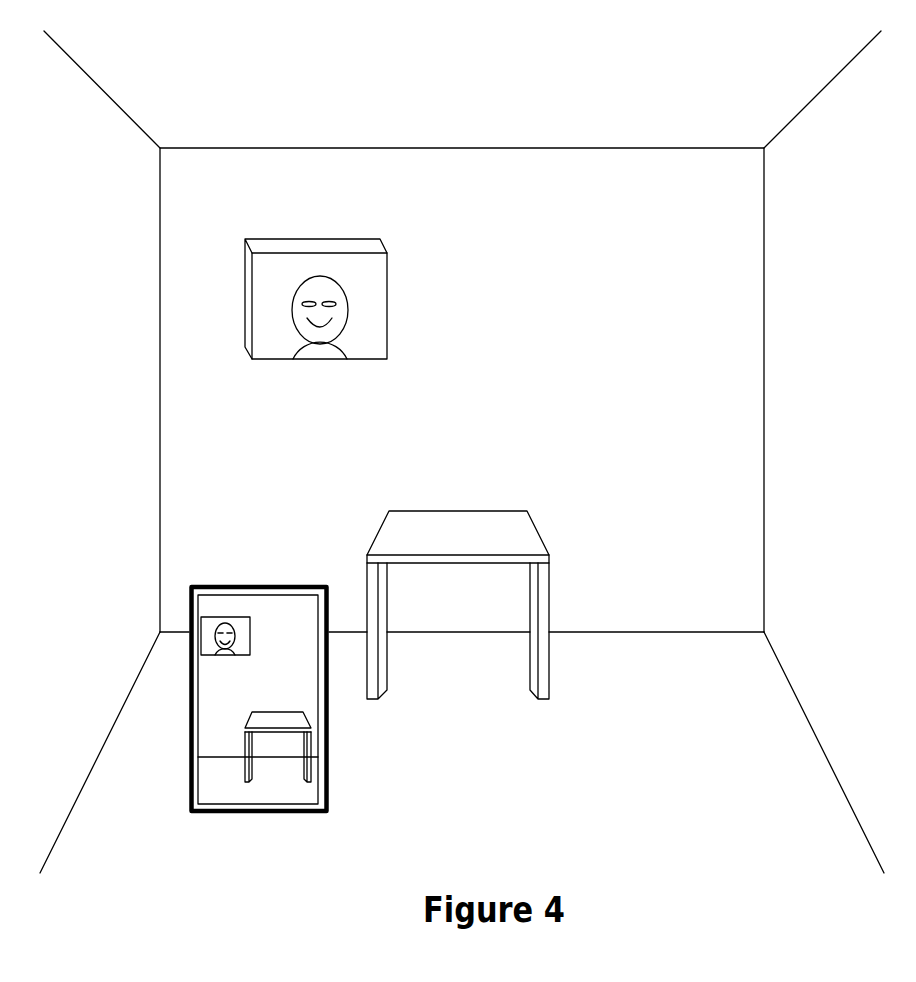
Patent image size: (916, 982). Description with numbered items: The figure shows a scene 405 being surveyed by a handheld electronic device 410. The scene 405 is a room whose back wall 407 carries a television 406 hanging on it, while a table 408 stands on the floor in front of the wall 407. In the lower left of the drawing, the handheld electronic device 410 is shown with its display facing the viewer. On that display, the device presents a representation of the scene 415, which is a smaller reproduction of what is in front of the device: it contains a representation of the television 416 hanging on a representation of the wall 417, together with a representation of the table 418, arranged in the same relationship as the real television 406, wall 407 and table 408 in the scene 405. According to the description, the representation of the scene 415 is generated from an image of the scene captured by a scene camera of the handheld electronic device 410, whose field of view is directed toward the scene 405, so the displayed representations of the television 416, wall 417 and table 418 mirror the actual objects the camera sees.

The scene 405 is at (750, 129).
The television 406 is at (340, 237).
The wall 407 is at (542, 347).
The table 408 is at (475, 508).
The handheld electronic device 410 is at (258, 582).
The representation of the scene 415 is at (308, 685).
The representation of the television 416 is at (241, 617).
The representation of the wall 417 is at (303, 659).
The representation of the table 418 is at (245, 710).